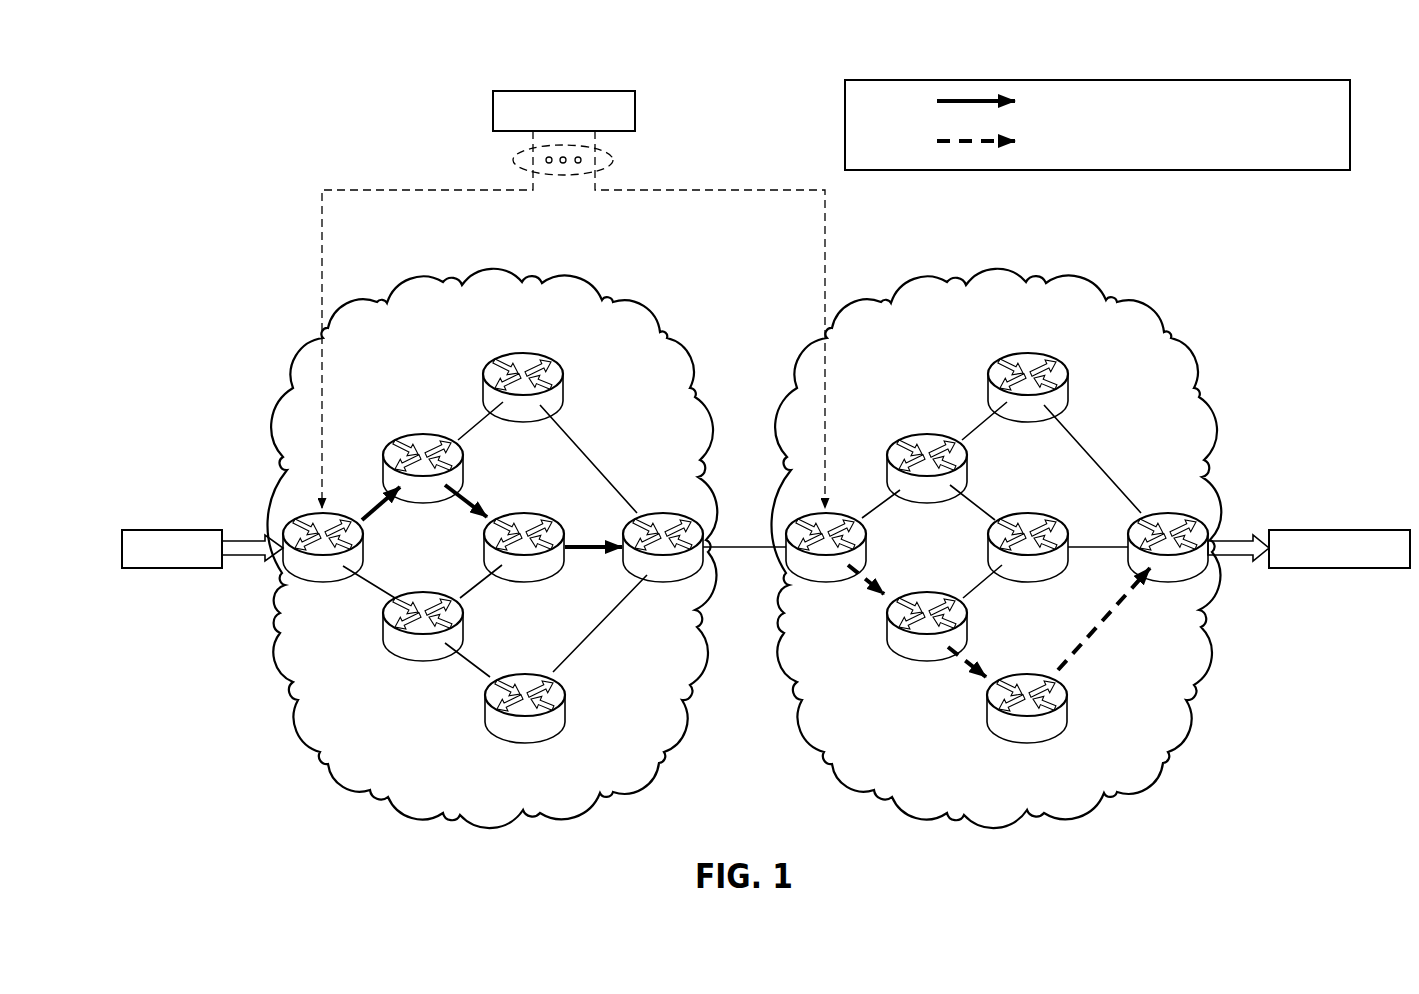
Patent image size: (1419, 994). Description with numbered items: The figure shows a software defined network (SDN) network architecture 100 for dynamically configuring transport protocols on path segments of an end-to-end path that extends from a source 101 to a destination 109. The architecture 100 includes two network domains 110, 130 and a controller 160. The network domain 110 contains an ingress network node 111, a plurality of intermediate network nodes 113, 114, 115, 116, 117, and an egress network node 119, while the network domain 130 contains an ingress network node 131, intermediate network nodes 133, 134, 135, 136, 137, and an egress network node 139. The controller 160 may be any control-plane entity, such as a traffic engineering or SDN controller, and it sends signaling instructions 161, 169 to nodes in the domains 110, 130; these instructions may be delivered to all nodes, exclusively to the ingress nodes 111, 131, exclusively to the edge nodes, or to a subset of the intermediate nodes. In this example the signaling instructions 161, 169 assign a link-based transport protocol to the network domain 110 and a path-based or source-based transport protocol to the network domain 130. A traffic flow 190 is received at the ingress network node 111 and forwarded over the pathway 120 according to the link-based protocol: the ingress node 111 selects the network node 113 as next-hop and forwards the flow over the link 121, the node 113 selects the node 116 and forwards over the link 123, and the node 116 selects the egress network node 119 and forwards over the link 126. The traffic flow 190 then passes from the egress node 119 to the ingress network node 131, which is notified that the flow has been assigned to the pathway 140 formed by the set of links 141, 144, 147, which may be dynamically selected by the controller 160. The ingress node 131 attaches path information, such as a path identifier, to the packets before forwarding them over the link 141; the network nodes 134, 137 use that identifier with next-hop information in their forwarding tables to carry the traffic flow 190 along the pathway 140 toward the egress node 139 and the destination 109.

The software defined network (SDN) network architecture 100 is at (310, 140).
The source 101 is at (172, 569).
The destination 109 is at (1340, 569).
The network domain 110 is at (494, 266).
The ingress network node 111 is at (343, 583).
The intermediate network node 113 is at (423, 434).
The intermediate network node 114 is at (423, 662).
The intermediate network node 115 is at (521, 353).
The intermediate network node 116 is at (523, 583).
The intermediate network node 117 is at (525, 744).
The egress network node 119 is at (663, 583).
The pathway 120 is at (937, 102).
The link 121 is at (374, 510).
The link 123 is at (468, 498).
The link 126 is at (584, 551).
The network domain 130 is at (1000, 266).
The ingress network node 131 is at (846, 583).
The intermediate network node 133 is at (927, 434).
The network node 134 is at (927, 662).
The intermediate network node 135 is at (1027, 353).
The intermediate network node 136 is at (1030, 513).
The network node 137 is at (1027, 744).
The egress network node 139 is at (1168, 583).
The pathway 140 is at (937, 142).
The link 141 is at (878, 580).
The link 144 is at (968, 660).
The link 147 is at (1088, 638).
The controller 160 is at (493, 110).
The signaling instruction 161 is at (422, 190).
The signaling instruction 169 is at (717, 190).
The traffic flow 190 is at (245, 541).